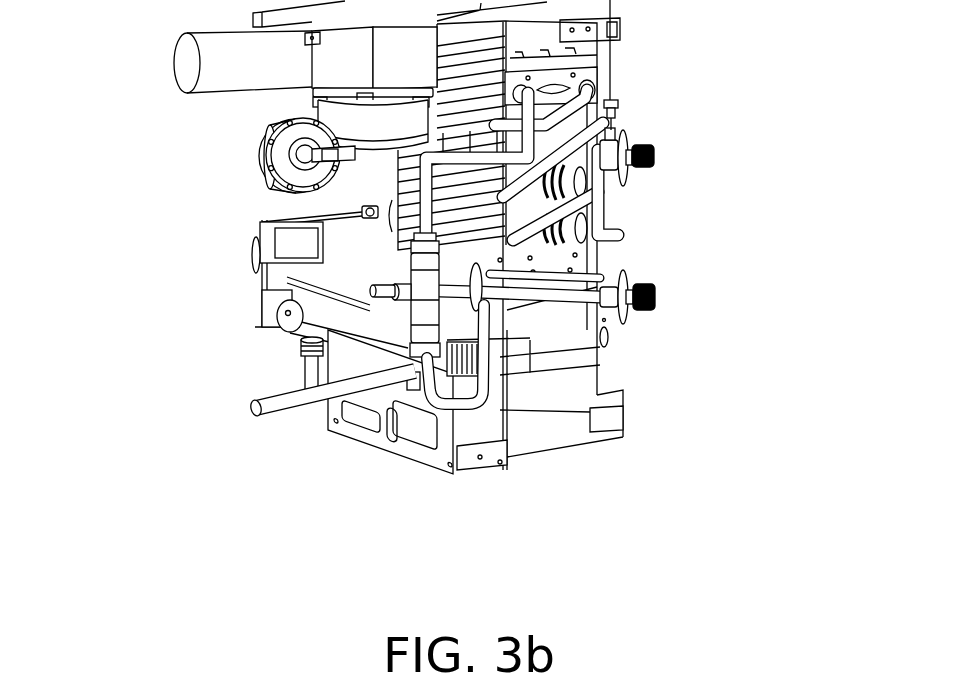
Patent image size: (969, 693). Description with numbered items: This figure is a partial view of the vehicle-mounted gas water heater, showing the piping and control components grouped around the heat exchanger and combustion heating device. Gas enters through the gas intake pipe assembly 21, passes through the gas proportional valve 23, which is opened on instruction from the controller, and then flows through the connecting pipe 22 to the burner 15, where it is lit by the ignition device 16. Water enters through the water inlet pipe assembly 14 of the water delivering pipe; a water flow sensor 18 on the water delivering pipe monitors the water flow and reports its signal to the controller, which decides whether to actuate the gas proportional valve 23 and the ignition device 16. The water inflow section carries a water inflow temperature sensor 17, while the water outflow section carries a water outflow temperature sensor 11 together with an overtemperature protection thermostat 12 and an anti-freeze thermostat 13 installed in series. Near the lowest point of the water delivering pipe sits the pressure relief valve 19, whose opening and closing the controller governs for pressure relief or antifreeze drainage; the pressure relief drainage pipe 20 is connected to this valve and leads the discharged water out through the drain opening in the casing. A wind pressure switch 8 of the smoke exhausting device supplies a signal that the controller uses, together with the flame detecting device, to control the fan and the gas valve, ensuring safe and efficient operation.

The wind pressure switch 8 is at (303, 127).
The water outflow temperature sensor 11 is at (617, 110).
The overtemperature protection thermostat 12 is at (600, 173).
The anti-freeze thermostat 13 is at (603, 230).
The water inlet pipe assembly 14 is at (645, 308).
The burner 15 is at (623, 408).
The ignition device 16 is at (480, 378).
The water inflow temperature sensor 17 is at (367, 212).
The water flow sensor 18 is at (432, 300).
The pressure relief valve 19 is at (413, 388).
The pressure relief drainage pipe 20 is at (327, 388).
The gas intake pipe assembly 21 is at (312, 363).
The connecting pipe 22 is at (288, 313).
The gas proportional valve 23 is at (277, 252).